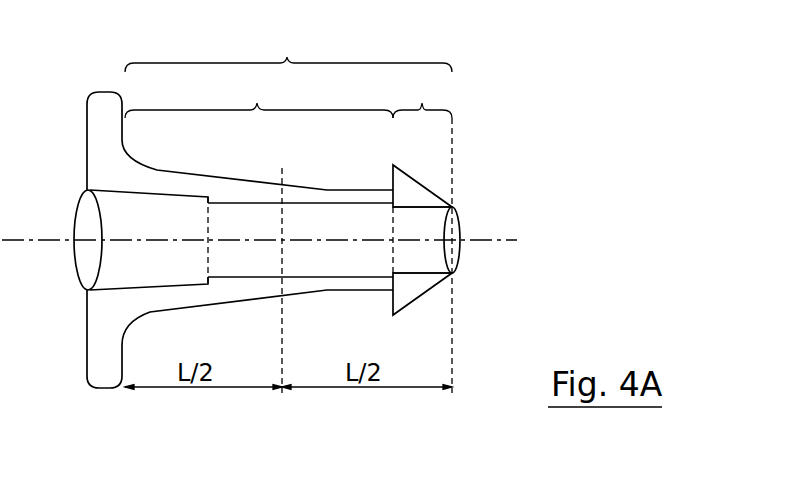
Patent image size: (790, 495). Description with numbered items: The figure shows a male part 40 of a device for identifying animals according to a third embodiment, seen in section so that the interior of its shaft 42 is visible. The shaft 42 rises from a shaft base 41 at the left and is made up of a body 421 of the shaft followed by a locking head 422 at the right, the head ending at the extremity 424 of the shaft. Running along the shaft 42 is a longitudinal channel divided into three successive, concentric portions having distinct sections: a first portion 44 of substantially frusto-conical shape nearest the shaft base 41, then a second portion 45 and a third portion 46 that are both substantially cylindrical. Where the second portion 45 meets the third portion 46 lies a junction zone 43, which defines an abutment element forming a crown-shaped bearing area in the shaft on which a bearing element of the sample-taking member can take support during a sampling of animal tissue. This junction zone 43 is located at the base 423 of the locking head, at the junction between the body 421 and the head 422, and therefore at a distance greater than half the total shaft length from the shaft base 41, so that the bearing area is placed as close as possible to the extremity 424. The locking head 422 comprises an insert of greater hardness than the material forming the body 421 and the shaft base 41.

The male part 40 is at (219, 411).
The shaft base 41 is at (98, 375).
The shaft 42 is at (288, 50).
The body of the shaft 421 is at (259, 180).
The locking head 422 is at (422, 174).
The base of the locking head 423 is at (393, 181).
The extremity of the shaft 424 is at (460, 225).
The junction zone 43 is at (388, 273).
The first portion 44 is at (162, 257).
The second portion 45 is at (245, 258).
The third portion 46 is at (422, 260).